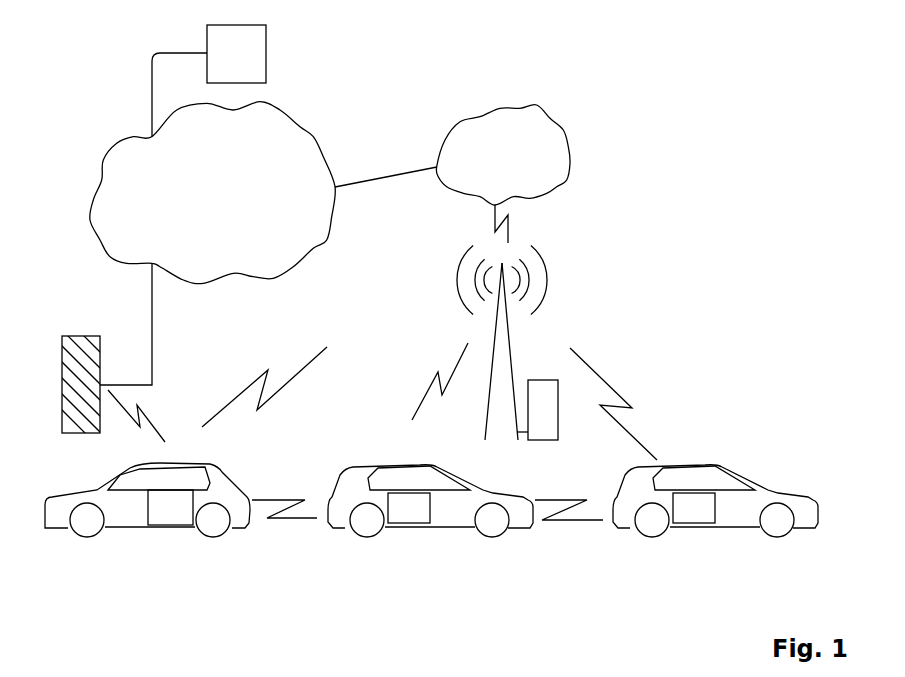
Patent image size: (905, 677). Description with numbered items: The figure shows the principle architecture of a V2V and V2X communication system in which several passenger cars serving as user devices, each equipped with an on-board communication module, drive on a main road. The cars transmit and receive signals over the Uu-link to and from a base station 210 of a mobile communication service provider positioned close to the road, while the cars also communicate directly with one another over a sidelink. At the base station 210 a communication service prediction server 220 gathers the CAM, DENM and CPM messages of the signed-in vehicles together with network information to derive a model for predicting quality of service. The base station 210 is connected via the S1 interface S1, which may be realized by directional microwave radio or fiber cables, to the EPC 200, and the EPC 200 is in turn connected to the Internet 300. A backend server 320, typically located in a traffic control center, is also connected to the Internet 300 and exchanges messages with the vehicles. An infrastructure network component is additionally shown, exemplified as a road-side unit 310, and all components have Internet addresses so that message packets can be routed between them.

The EPC 200 is at (518, 148).
The base station 210 is at (510, 360).
The communication service prediction server 220 is at (558, 415).
The Internet 300 is at (290, 147).
The road-side unit 310 is at (77, 336).
The backend server 320 is at (266, 47).
The S1 interface S1 is at (517, 224).